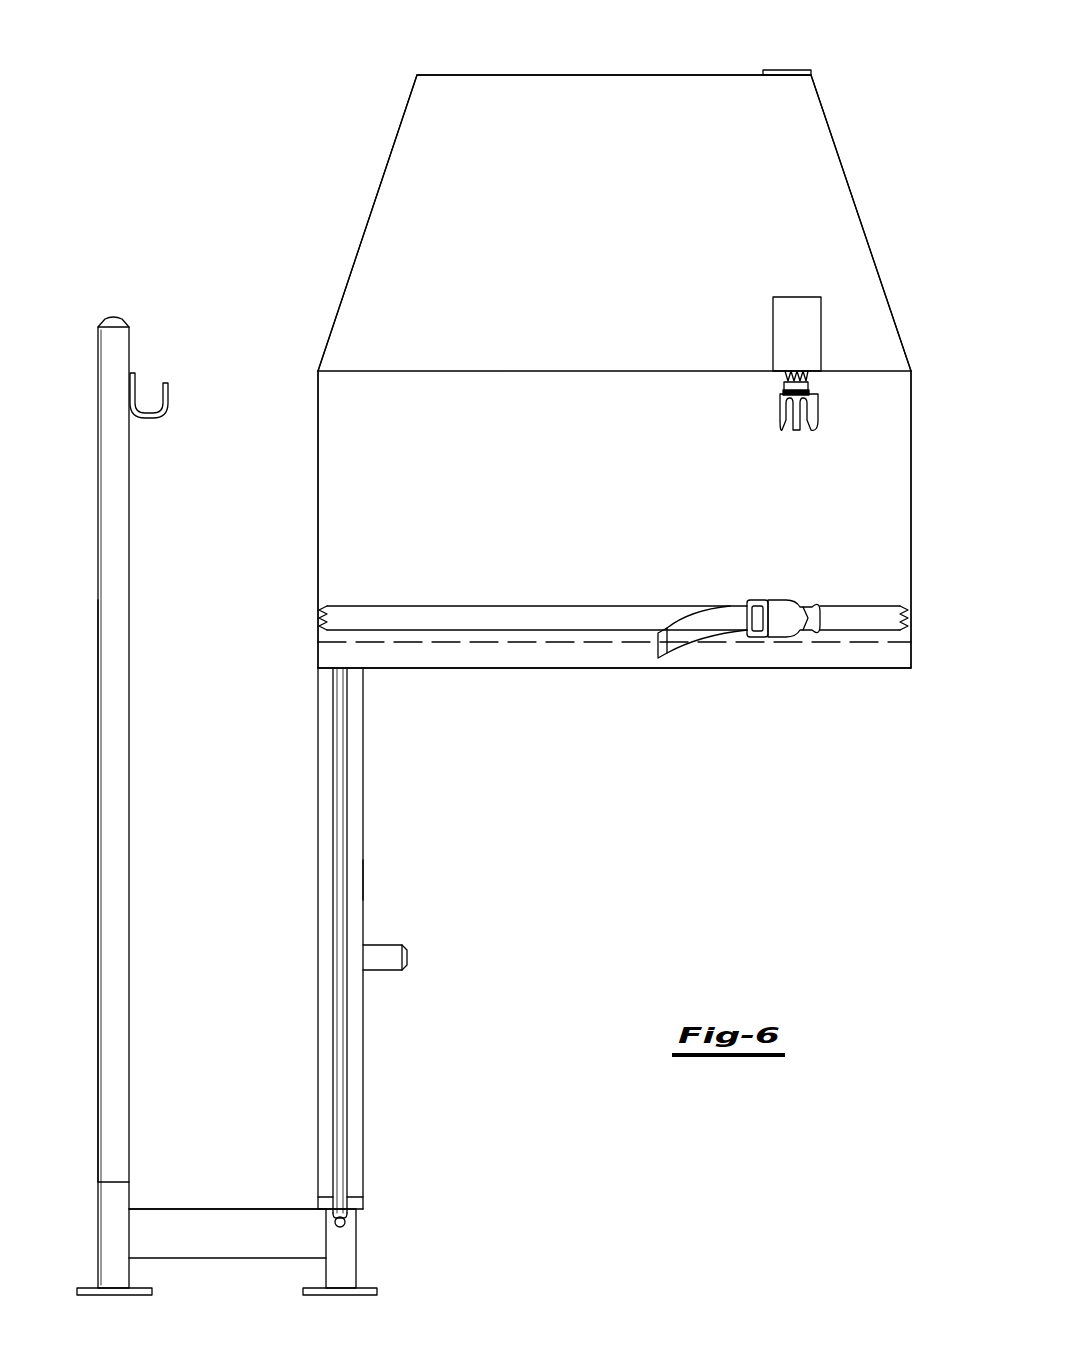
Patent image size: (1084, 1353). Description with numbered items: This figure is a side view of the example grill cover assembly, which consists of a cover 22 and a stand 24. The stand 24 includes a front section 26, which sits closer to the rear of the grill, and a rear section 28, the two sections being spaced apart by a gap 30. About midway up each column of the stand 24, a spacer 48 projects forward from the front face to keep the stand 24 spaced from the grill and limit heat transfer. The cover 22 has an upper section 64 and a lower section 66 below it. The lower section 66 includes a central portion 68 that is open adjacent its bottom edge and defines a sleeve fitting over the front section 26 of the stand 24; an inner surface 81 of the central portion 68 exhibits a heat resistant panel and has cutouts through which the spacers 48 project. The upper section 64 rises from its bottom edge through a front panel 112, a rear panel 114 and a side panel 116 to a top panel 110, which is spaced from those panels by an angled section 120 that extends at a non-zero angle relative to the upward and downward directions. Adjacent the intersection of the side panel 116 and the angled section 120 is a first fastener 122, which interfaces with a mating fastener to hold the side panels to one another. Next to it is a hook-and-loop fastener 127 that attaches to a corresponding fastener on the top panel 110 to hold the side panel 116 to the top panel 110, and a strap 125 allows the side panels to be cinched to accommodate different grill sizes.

The cover 22 is at (875, 77).
The stand 24 is at (127, 308).
The front section 26 is at (402, 1246).
The rear section 28 is at (81, 613).
The gap 30 is at (233, 837).
The spacer 48 is at (381, 960).
The upper section 64 is at (897, 297).
The lower section 66 is at (423, 1104).
The central portion 68 is at (402, 774).
The inner surface 81 is at (363, 873).
The top panel 110 is at (613, 74).
The front panel 112 is at (913, 487).
The rear panel 114 is at (316, 487).
The side panel 116 is at (620, 515).
The angled section 120 is at (867, 169).
The first fastener 122 is at (766, 420).
The strap 125 is at (784, 581).
The hook-and-loop fastener 127 is at (803, 307).